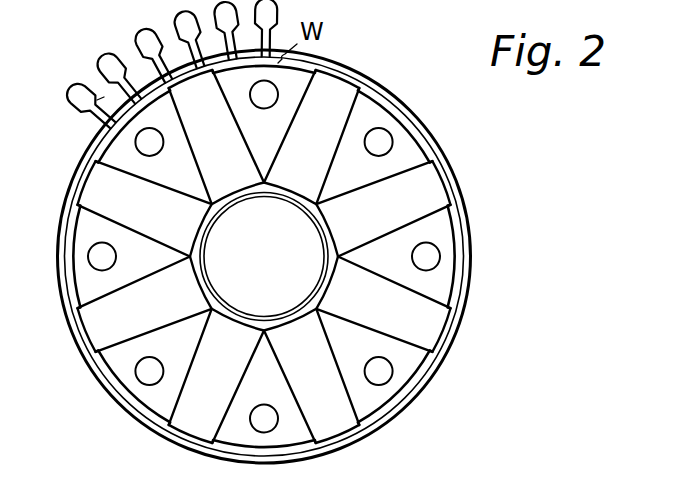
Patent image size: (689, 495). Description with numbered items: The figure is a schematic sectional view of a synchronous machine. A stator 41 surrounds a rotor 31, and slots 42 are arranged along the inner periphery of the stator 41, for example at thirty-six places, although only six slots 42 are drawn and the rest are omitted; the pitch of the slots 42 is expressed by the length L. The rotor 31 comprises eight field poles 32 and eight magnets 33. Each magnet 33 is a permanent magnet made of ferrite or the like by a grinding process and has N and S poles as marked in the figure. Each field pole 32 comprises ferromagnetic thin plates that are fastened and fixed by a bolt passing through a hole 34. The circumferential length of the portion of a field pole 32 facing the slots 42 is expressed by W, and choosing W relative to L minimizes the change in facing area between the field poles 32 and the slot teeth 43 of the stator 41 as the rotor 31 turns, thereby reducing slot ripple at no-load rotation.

The rotor 31 is at (289, 206).
The field pole 32 is at (387, 110).
The magnet 33 is at (337, 90).
The hole 34 is at (394, 140).
The stator 41 is at (52, 213).
The slot 42 is at (67, 103).
The slot tooth 43 is at (101, 99).